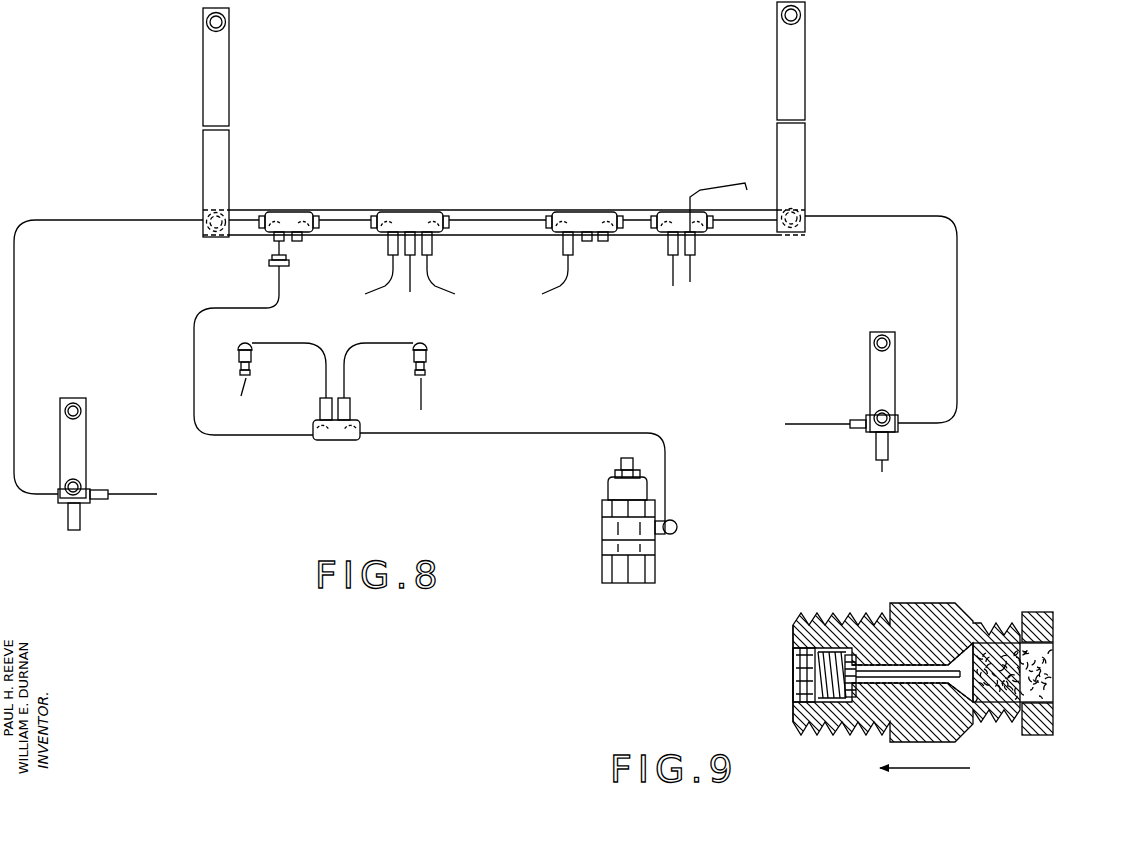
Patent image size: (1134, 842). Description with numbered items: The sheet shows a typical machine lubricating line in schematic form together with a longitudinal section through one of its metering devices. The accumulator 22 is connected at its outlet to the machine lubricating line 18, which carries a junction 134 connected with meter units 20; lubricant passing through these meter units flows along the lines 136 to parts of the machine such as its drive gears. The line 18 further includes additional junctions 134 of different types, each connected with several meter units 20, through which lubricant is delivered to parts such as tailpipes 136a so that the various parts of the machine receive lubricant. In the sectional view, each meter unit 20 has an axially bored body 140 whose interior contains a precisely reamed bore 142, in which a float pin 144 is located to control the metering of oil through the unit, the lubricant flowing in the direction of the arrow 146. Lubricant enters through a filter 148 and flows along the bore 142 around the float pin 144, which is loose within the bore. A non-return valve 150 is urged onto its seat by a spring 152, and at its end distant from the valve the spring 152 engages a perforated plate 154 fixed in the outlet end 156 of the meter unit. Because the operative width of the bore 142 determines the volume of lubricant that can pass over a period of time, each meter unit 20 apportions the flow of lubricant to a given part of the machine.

In FIG. 8, the machine lubricating line 18 is at (488, 214).
In FIG. 8, the meter unit 20 is at (434, 241).
In FIG. 9, the meter unit 20 is at (926, 684).
In FIG. 8, the accumulator 22 is at (586, 492).
In FIG. 8, the junction 134 is at (288, 212).
In FIG. 8, the lines 136 is at (344, 373).
In FIG. 8, the tailpipes 136a is at (455, 292).
In FIG. 9, the axially bored body 140 is at (962, 604).
In FIG. 9, the reamed bore 142 is at (881, 667).
In FIG. 9, the float pin 144 is at (900, 676).
In FIG. 9, the arrow 146 is at (956, 762).
In FIG. 9, the filter 148 is at (1052, 672).
In FIG. 9, the non-return valve 150 is at (855, 692).
In FIG. 9, the spring 152 is at (838, 656).
In FIG. 9, the perforated plate 154 is at (812, 713).
In FIG. 9, the outlet end 156 is at (812, 678).